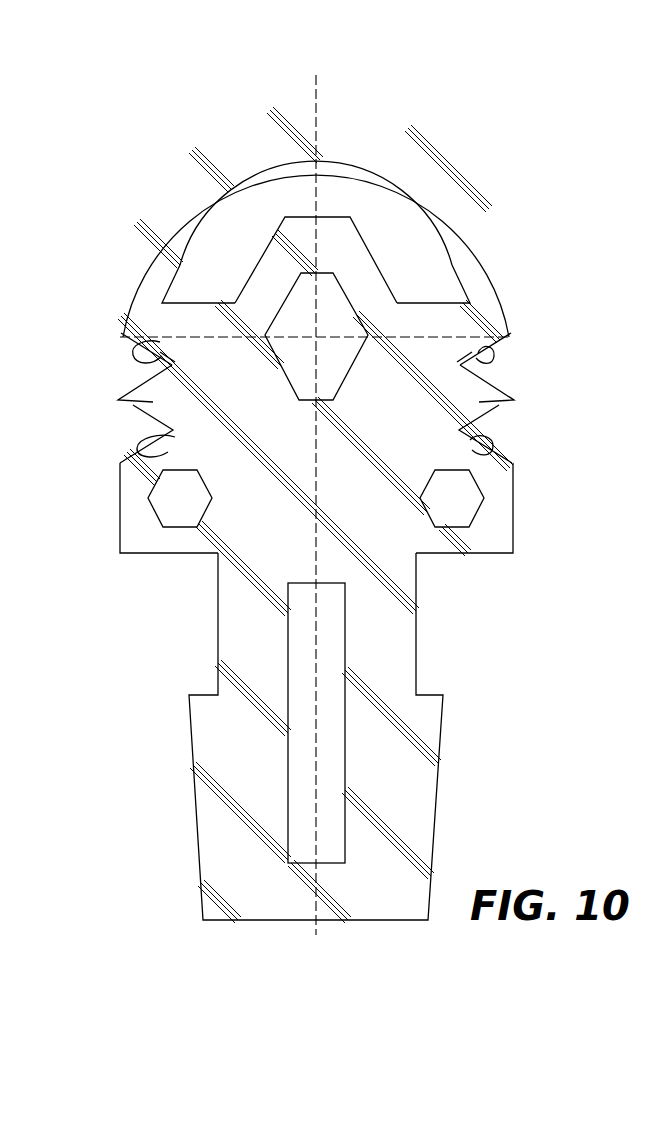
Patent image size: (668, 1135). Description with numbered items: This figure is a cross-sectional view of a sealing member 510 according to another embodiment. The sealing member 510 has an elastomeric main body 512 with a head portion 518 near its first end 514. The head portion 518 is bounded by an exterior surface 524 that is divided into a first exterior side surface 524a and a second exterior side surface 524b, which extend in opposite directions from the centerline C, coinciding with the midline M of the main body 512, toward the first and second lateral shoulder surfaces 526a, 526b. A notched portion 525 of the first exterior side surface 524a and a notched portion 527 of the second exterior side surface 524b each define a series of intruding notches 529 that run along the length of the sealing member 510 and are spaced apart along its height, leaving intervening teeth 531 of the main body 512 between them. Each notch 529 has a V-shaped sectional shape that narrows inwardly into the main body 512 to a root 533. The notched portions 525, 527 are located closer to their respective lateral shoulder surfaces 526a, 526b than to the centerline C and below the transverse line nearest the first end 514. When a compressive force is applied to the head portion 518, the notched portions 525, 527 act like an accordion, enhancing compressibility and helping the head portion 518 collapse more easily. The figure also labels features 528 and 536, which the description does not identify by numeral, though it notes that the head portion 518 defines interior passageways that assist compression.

The sealing member 510 is at (203, 97).
The elastomeric main body 512 is at (478, 306).
The first end 514 is at (315, 103).
The head portion 518 is at (518, 489).
The exterior surface 524 is at (325, 197).
The first exterior side surface 524a is at (152, 194).
The second exterior side surface 524b is at (487, 203).
The notched portion 525 is at (98, 368).
The first lateral shoulder surface 526a is at (160, 554).
The second lateral shoulder surface 526b is at (455, 554).
The notched portion 527 is at (548, 350).
The central post 528 is at (333, 318).
The intruding notches 529 is at (160, 352).
The intervening teeth 531 is at (150, 403).
The root 533 is at (172, 364).
The inner dome surface 536 is at (203, 248).
The centerline C is at (318, 103).
The midline M is at (320, 139).